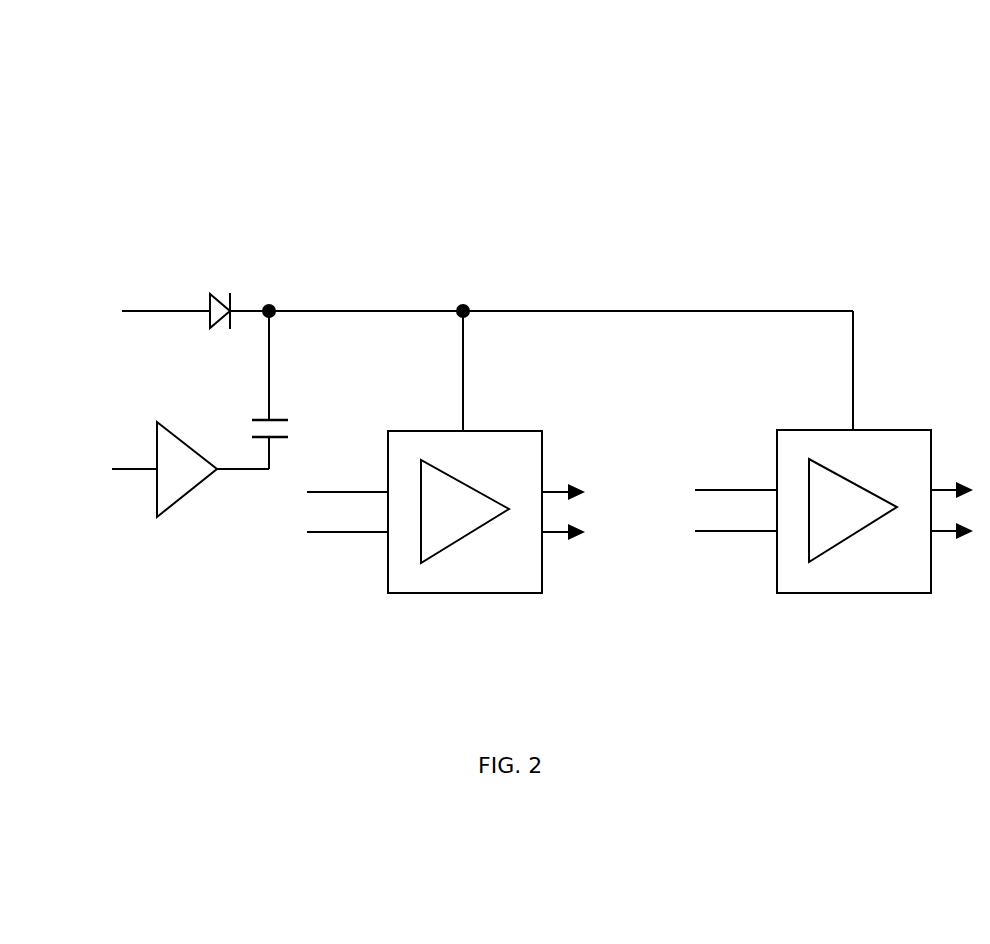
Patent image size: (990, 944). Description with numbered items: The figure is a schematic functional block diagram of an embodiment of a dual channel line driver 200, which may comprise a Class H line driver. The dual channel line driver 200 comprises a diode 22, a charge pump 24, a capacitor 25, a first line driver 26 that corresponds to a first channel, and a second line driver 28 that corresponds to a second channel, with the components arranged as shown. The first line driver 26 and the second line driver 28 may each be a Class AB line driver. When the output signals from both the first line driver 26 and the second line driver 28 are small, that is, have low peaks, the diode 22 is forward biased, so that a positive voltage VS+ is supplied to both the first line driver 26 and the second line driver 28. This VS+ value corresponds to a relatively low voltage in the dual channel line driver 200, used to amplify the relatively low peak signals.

The dual channel line driver 200 is at (215, 103).
The diode 22 is at (210, 293).
The charge pump 24 is at (157, 422).
The capacitor 25 is at (262, 418).
The first line driver 26 is at (430, 433).
The second line driver 28 is at (809, 432).